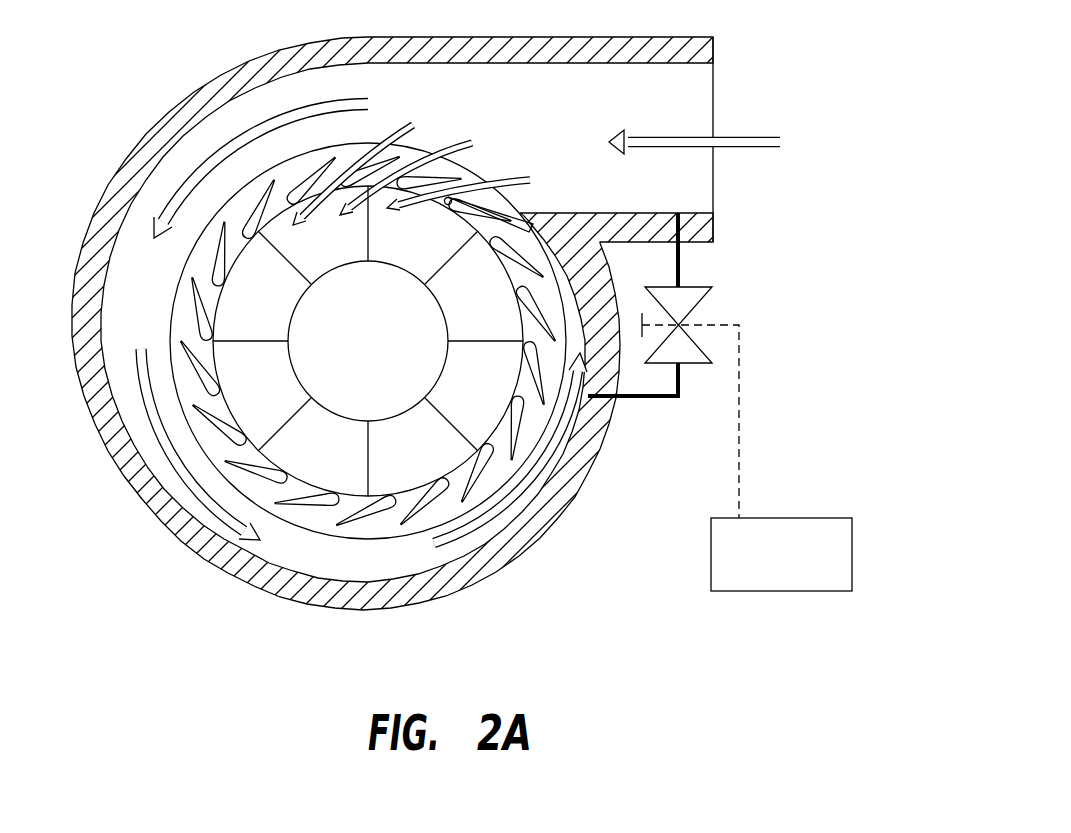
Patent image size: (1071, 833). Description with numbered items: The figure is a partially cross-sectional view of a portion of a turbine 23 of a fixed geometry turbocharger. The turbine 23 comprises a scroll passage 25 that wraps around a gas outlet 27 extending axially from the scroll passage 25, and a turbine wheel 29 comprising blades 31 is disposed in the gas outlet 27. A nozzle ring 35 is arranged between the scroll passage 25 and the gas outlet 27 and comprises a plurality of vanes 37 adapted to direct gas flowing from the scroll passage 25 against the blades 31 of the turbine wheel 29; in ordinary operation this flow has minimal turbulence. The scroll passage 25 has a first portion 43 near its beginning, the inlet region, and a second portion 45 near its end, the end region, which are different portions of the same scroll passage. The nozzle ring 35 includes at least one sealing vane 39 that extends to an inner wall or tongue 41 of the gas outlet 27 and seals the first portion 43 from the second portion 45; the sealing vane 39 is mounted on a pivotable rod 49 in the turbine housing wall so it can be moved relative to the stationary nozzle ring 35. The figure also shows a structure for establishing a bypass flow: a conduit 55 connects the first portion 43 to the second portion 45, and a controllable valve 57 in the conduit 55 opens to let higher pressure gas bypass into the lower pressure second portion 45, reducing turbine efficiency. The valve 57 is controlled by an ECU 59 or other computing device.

The turbine 23 is at (268, 615).
The scroll passage 25 is at (690, 103).
The gas outlet 27 is at (316, 461).
The turbine wheel 29 is at (319, 361).
The blades 31 is at (273, 247).
The nozzle ring 35 is at (208, 269).
The vanes 37 is at (302, 180).
The sealing vane 39 is at (496, 222).
The tongue 41 is at (507, 263).
The first portion 43 is at (697, 177).
The second portion 45 is at (575, 428).
The pivotable rod 49 is at (447, 206).
The conduit 55 is at (681, 267).
The controllable valve 57 is at (704, 304).
The ECU 59 is at (811, 518).